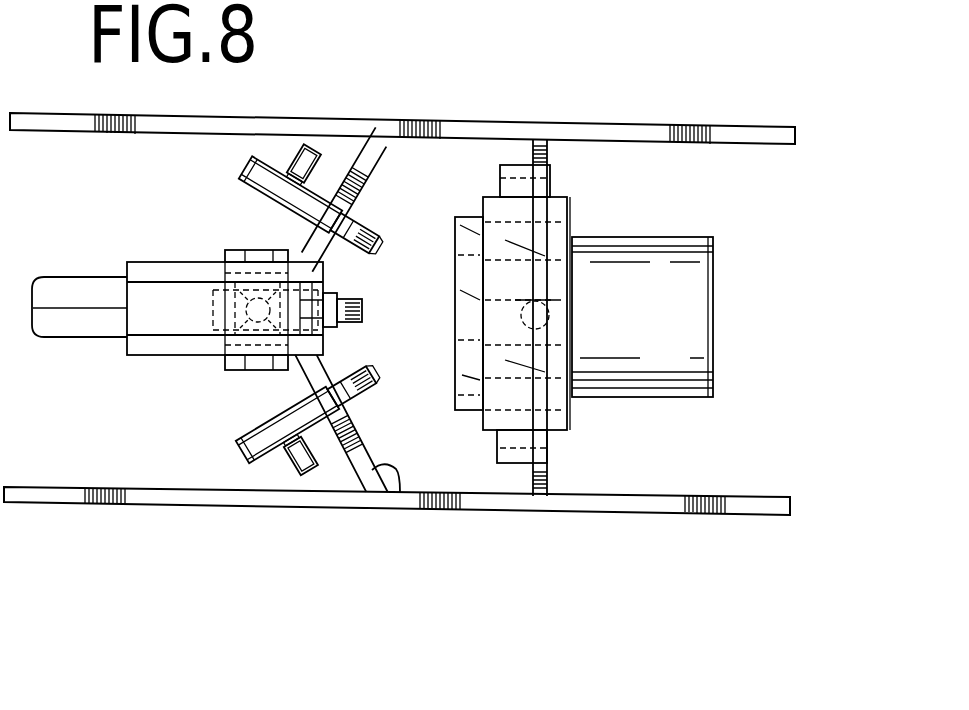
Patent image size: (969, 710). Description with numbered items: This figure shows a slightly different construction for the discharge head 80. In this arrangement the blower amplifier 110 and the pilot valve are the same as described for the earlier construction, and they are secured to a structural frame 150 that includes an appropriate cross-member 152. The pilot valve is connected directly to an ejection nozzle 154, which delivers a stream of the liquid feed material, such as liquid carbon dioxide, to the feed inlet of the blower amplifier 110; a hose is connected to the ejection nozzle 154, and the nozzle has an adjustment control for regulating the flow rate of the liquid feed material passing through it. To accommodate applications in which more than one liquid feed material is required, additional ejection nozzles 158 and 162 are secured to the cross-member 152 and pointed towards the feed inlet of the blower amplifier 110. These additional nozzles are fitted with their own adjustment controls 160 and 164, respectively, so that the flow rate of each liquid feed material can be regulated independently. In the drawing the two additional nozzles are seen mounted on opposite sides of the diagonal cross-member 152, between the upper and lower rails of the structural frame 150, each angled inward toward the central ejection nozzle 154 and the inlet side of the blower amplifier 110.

The discharge head 80 is at (835, 551).
The blower amplifier 110 is at (632, 237).
The structural frame 150 is at (795, 135).
The cross-member 152 is at (402, 513).
The ejection nozzle 154 is at (370, 293).
The additional ejection nozzle 158 is at (247, 172).
The adjustment control 160 is at (288, 154).
The additional ejection nozzle 162 is at (263, 460).
The adjustment control 164 is at (310, 478).